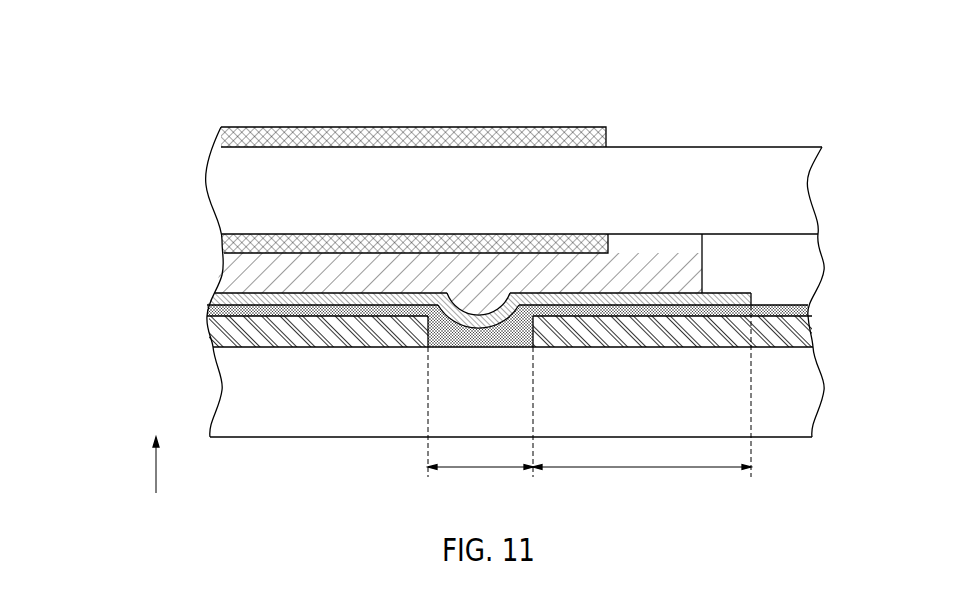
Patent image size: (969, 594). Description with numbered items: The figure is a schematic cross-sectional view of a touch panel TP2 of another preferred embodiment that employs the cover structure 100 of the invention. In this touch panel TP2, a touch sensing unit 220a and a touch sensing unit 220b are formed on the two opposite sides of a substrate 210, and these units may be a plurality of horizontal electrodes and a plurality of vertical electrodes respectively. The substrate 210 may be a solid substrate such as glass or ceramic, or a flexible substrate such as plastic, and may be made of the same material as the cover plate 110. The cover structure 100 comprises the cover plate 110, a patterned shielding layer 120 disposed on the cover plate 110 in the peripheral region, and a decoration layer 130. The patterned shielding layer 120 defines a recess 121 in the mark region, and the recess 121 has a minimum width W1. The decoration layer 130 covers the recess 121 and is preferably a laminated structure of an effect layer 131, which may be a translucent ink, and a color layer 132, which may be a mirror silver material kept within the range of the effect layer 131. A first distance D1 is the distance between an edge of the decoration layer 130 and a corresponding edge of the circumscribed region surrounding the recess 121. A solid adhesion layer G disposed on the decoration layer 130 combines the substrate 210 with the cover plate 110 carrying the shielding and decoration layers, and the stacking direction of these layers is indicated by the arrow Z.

The touch panel TP2 is at (773, 110).
The touch sensing unit 220b is at (242, 135).
The substrate 210 is at (230, 190).
The touch sensing unit 220a is at (232, 247).
The solid adhesion layer G is at (230, 277).
The cover structure 100 is at (95, 267).
The decoration layer 130 is at (135, 283).
The color layer 132 is at (218, 299).
The effect layer 131 is at (212, 311).
The patterned shielding layer 120 is at (215, 332).
The recess 121 is at (478, 330).
The cover plate 110 is at (222, 388).
The minimum width W1 is at (480, 412).
The first distance D1 is at (642, 391).
The Z direction Z is at (153, 475).